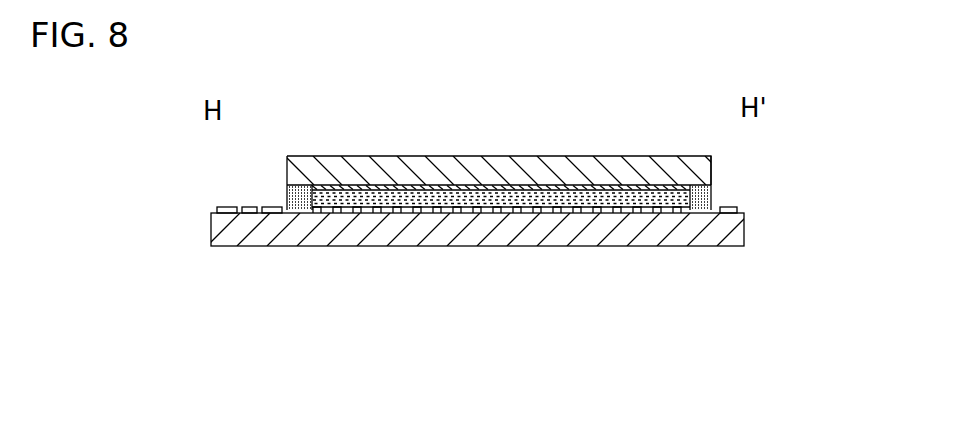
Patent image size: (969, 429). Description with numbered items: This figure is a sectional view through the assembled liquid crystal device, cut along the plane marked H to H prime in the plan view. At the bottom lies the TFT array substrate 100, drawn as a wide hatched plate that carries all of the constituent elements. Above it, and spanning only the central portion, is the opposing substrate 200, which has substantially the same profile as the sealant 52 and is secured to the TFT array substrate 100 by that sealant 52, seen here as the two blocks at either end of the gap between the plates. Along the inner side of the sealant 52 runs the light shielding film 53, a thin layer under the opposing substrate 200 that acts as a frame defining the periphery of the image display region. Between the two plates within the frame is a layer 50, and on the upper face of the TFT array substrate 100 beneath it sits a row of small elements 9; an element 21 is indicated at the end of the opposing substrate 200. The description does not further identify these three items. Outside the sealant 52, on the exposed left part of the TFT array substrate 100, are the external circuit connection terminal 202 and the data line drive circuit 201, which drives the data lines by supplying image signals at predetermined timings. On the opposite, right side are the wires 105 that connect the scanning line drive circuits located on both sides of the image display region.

The TFT array substrate 100 is at (592, 238).
The wires 105 is at (728, 214).
The external circuit connection terminal 202 is at (228, 207).
The data line drive circuit 201 is at (273, 207).
The opposing substrate 200 is at (520, 167).
The counter electrode 21 is at (693, 157).
The light shielding film 53 is at (322, 186).
The sealant 52 is at (712, 192).
The electrophoretic layer 50 is at (500, 205).
The pixel electrode 9 is at (377, 213).